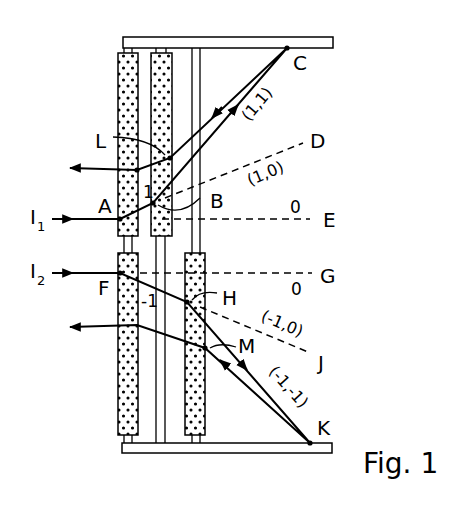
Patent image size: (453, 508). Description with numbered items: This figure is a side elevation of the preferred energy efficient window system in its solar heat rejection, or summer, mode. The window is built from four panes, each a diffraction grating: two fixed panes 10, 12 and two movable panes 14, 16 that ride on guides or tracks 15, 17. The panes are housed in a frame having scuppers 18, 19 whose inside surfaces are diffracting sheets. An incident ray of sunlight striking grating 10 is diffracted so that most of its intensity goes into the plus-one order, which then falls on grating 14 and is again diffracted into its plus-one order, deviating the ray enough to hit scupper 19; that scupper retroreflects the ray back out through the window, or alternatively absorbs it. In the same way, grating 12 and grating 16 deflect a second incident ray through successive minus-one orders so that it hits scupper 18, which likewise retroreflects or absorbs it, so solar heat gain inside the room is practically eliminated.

The fixed diffraction grating windowpane 10 is at (118, 93).
The fixed diffraction grating windowpane 12 is at (118, 385).
The movable diffraction grating windowpane 14 is at (172, 65).
The guide or track 15 is at (167, 430).
The movable diffraction grating windowpane 16 is at (207, 392).
The guide or track 17 is at (200, 62).
The scupper 18 is at (275, 453).
The scupper 19 is at (275, 37).